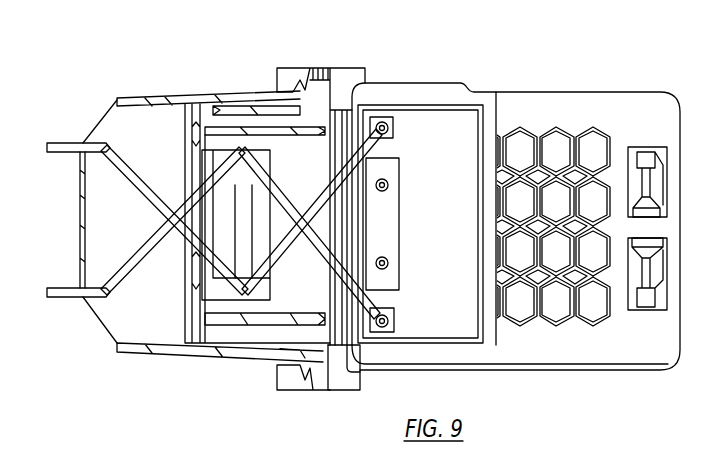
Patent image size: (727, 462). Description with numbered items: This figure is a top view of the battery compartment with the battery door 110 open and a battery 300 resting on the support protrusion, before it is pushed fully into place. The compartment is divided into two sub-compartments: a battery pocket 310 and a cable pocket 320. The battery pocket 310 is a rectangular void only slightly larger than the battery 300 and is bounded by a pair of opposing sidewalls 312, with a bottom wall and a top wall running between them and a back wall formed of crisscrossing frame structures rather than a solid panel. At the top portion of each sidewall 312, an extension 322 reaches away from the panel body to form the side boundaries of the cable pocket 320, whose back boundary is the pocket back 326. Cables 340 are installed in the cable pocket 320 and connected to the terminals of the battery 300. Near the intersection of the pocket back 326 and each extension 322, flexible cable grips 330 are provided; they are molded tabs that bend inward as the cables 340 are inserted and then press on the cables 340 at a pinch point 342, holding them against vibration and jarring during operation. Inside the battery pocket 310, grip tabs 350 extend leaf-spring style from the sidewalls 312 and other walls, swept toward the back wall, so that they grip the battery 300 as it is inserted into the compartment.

The battery door 110 is at (560, 347).
The battery 300 is at (462, 138).
The battery pocket 310 is at (298, 158).
The sidewalls 312 is at (233, 99).
The cable pocket 320 is at (153, 138).
The extension 322 is at (129, 101).
The pocket back 326 is at (80, 226).
The cable grips 330 is at (103, 120).
The cables 340 is at (376, 128).
The pinch point 342 is at (82, 147).
The grip tabs 350 is at (243, 250).